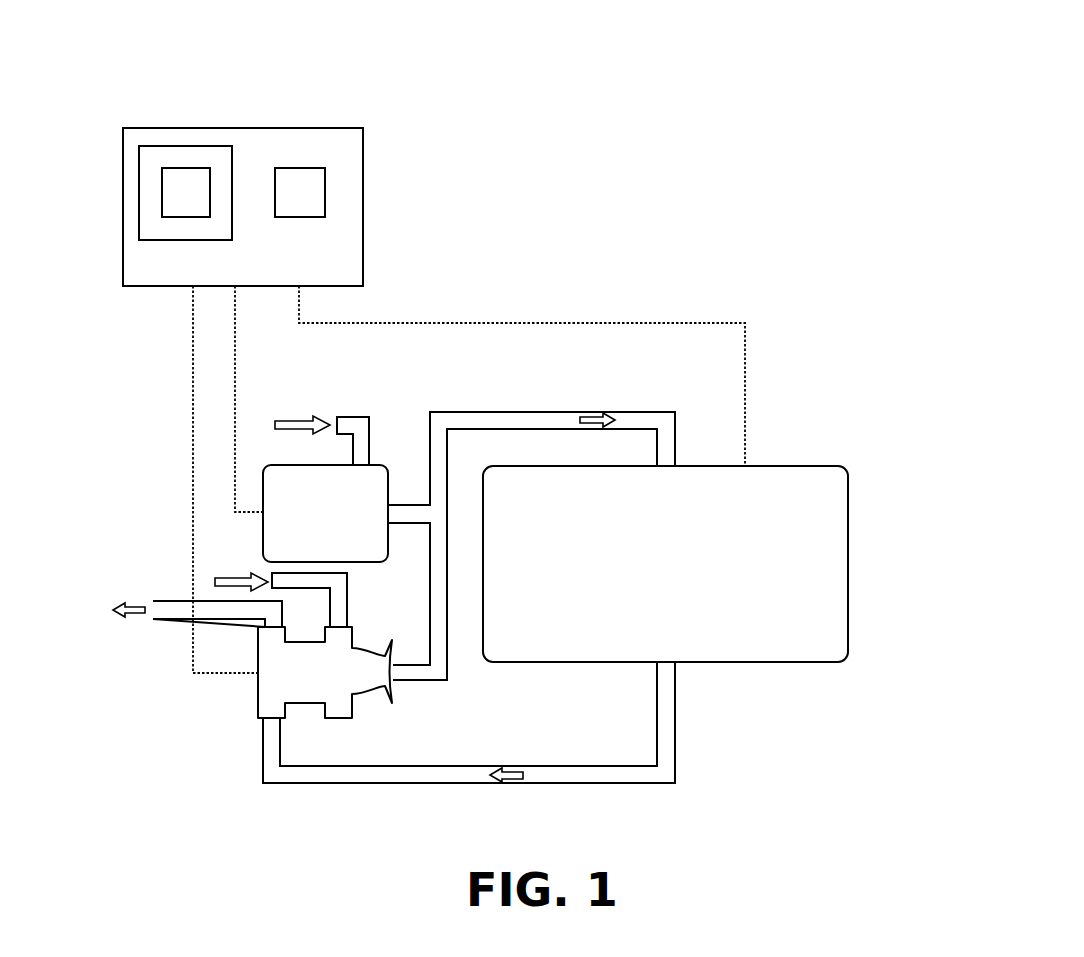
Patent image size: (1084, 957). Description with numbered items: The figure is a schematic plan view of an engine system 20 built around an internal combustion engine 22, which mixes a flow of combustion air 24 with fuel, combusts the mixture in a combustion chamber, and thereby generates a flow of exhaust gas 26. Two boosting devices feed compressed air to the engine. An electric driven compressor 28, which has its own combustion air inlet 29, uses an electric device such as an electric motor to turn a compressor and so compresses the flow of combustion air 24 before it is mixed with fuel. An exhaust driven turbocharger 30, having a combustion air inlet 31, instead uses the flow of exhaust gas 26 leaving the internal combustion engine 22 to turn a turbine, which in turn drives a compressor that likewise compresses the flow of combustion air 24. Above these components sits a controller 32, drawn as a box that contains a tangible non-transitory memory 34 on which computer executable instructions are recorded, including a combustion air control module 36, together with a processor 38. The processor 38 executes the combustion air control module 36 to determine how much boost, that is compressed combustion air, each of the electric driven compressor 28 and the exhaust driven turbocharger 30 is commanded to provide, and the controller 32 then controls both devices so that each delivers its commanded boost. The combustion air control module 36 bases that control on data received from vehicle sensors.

The engine system 20 is at (817, 268).
The internal combustion engine 22 is at (665, 564).
The flow of combustion air 24 is at (297, 416).
The flow of exhaust gas 26 is at (140, 618).
The electric driven compressor 28 is at (325, 513).
The combustion air inlet 29 is at (362, 416).
The exhaust driven turbocharger 30 is at (325, 672).
The combustion air inlet 31 is at (348, 590).
The controller 32 is at (248, 128).
The tangible non-transitory memory 34 is at (185, 146).
The combustion air control module 36 is at (186, 192).
The processor 38 is at (300, 192).